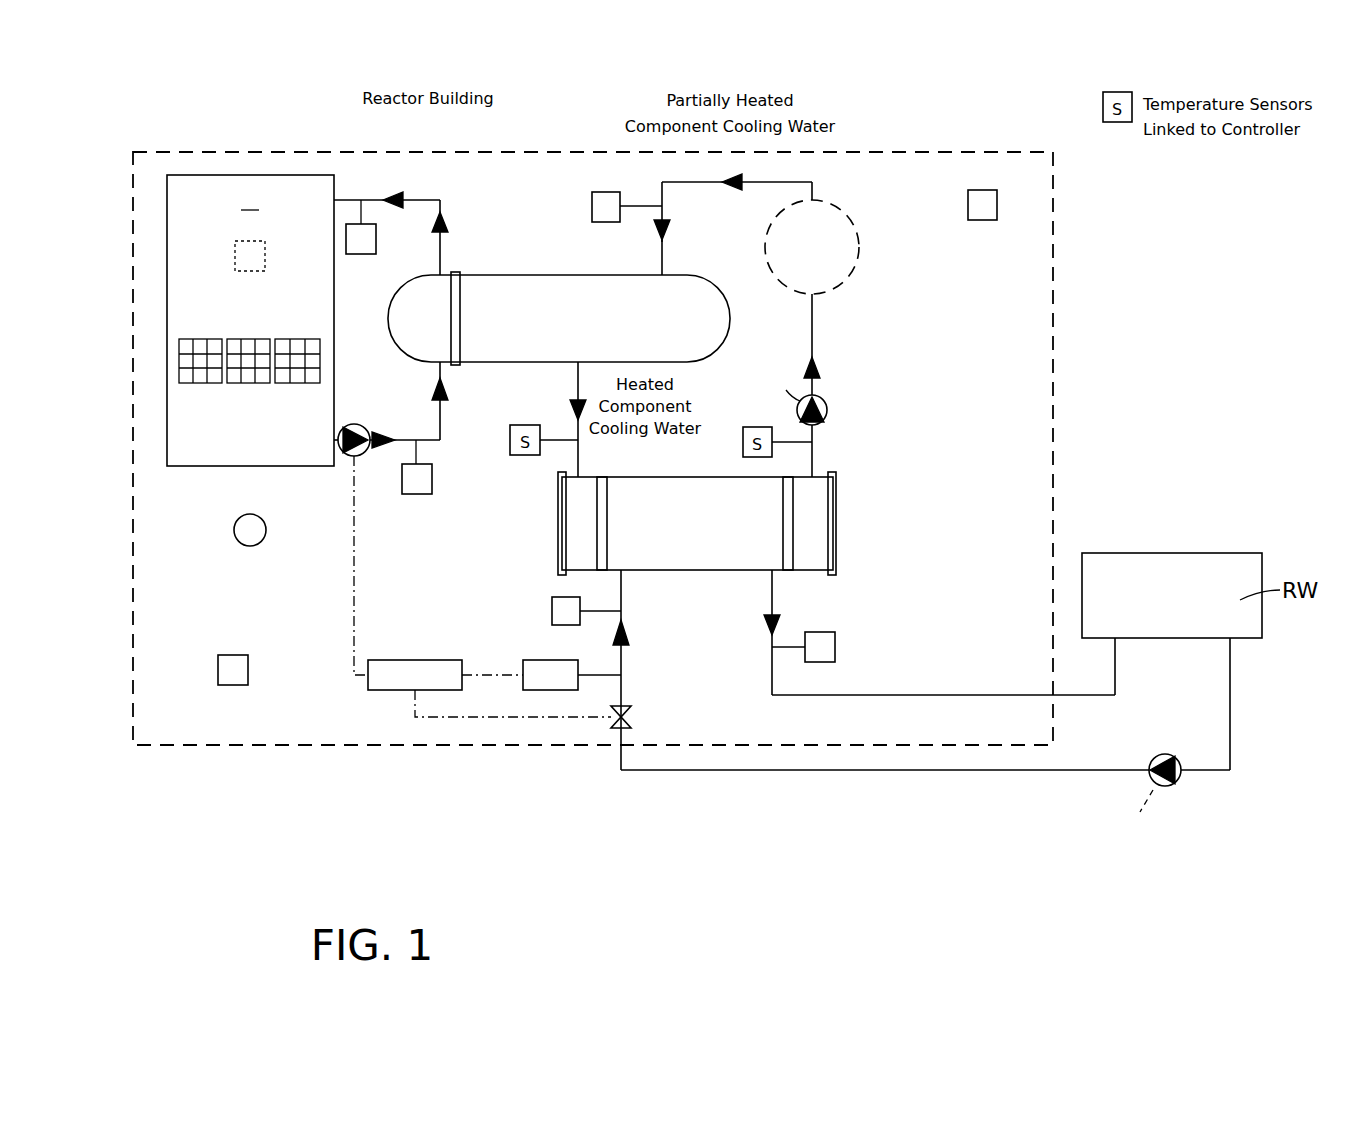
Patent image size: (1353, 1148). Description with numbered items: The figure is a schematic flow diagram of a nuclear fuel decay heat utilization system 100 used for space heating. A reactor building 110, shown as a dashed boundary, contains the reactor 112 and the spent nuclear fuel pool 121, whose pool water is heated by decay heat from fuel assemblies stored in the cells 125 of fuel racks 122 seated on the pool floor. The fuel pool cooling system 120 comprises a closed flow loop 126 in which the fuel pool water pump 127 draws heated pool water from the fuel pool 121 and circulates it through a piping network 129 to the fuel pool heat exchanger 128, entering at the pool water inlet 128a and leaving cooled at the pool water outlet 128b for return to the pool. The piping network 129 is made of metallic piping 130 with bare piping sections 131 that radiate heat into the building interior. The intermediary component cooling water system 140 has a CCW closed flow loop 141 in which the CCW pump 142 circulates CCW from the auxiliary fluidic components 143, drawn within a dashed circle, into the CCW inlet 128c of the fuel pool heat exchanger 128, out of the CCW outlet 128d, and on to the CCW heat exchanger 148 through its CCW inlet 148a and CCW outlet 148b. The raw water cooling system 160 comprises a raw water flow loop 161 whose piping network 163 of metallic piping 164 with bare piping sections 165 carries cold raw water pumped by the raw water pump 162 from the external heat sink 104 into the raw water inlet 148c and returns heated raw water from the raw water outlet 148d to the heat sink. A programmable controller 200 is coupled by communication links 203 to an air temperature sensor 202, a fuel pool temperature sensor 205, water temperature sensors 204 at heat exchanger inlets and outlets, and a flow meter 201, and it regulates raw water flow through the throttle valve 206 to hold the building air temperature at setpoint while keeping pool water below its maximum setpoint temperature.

The nuclear fuel decay heat utilization system 100 is at (182, 96).
The external heat sink 104 is at (1230, 553).
The reactor building 110 is at (438, 152).
The reactor 112 is at (250, 546).
The fuel pool cooling system 120 is at (378, 458).
The spent nuclear fuel pool 121 is at (210, 466).
The fuel racks 122 is at (200, 385).
The cells 125 is at (250, 375).
The closed flow loop 126 is at (362, 192).
The fuel pool water pump 127 is at (350, 458).
The fuel pool heat exchanger 128 is at (572, 275).
The pool water inlet 128a is at (438, 366).
The pool water outlet 128b is at (445, 275).
The CCW inlet 128c is at (660, 275).
The CCW outlet 128d is at (573, 366).
The piping network 129 is at (446, 446).
The metallic piping 130 is at (438, 183).
The bare piping sections 131 is at (445, 204).
The component cooling water system 140 is at (740, 527).
The CCW closed flow loop 141 is at (812, 322).
The CCW pump 142 is at (828, 412).
The auxiliary fluidic components 143 is at (860, 250).
The CCW heat exchanger 148 is at (836, 533).
The CCW inlet 148a is at (582, 477).
The CCW outlet 148b is at (818, 475).
The raw water inlet 148c is at (622, 576).
The raw water outlet 148d is at (774, 576).
The raw water cooling system 160 is at (668, 785).
The raw water flow loop 161 is at (778, 785).
The raw water pump 162 is at (1170, 786).
The piping network 163 is at (1047, 785).
The metallic piping 164 is at (1242, 702).
The bare piping sections 165 is at (1232, 750).
The programmable controller 200 is at (432, 660).
The flow meter 201 is at (540, 660).
The air temperature sensor 202 is at (225, 655).
The communication links 203 is at (354, 556).
The water temperature sensors 204 is at (607, 192).
The fuel pool temperature sensor 205 is at (235, 256).
The throttle valve 206 is at (628, 705).